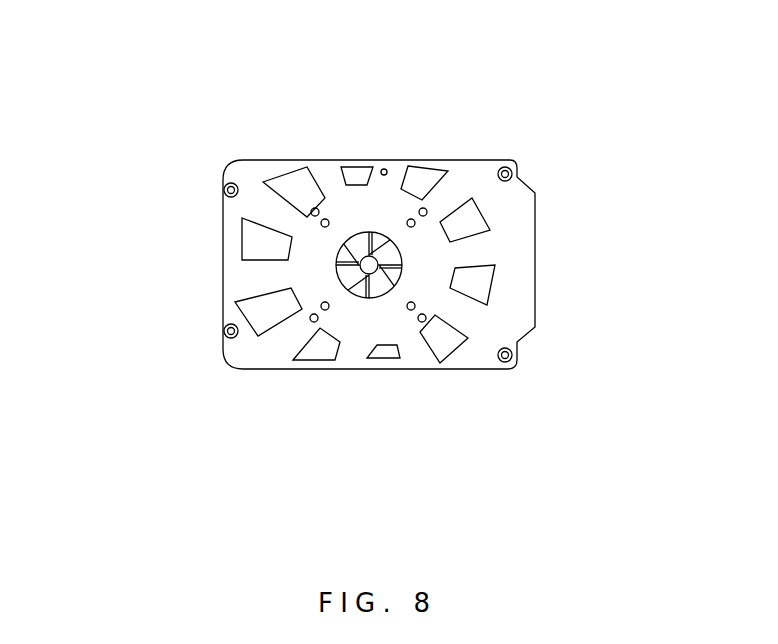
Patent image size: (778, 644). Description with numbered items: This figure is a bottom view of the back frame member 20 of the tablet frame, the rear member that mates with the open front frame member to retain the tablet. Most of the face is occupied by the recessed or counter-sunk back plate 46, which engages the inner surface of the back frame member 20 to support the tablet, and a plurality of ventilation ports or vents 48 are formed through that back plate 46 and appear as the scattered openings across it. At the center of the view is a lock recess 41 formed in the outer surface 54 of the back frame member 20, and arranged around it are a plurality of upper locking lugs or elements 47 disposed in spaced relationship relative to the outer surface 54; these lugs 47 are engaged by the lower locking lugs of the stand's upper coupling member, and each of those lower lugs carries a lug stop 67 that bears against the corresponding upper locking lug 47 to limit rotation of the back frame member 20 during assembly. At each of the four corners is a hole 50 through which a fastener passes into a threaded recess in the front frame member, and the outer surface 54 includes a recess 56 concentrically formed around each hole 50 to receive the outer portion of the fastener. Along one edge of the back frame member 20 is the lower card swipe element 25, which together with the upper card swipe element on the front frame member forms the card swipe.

The back frame member 20 is at (418, 405).
The lower card swipe element 25 is at (537, 285).
The lock recess 41 is at (383, 166).
The recessed or counter-sunk back plate 46 is at (277, 343).
The upper locking lug 47 is at (382, 233).
The ventilation port 48 is at (291, 185).
The hole 50 is at (222, 184).
The outer surface 54 is at (525, 274).
The recess 56 is at (220, 191).
The lug stop 67 is at (371, 231).